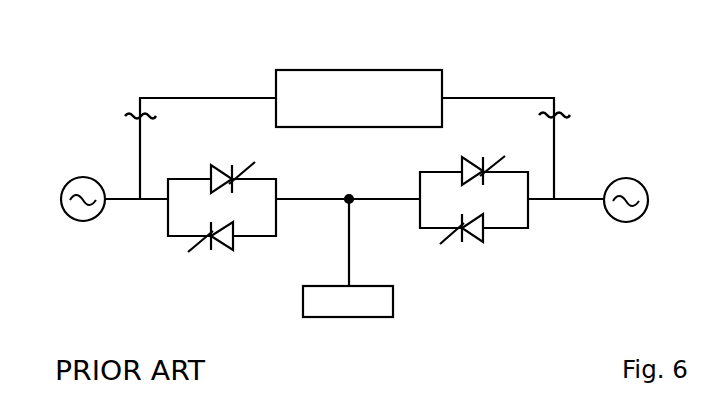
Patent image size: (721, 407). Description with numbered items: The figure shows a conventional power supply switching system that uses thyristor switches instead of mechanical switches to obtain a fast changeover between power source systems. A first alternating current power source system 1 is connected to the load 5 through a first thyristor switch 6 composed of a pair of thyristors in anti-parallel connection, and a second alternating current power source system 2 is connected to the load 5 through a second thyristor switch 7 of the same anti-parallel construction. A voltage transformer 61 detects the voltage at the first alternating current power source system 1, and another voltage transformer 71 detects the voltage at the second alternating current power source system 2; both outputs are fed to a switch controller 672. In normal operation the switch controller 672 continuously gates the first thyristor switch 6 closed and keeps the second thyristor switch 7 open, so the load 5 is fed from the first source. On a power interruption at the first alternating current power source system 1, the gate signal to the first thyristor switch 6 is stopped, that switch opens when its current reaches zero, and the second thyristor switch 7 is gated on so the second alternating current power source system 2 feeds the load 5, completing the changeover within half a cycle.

The first alternating current power source system 1 is at (63, 219).
The second alternating current power source system 2 is at (643, 220).
The load 5 is at (347, 322).
The first thyristor switch 6 is at (205, 245).
The second thyristor switch 7 is at (485, 250).
The voltage transformer 61 is at (128, 113).
The voltage transformer 71 is at (565, 110).
The switch controller 672 is at (370, 70).